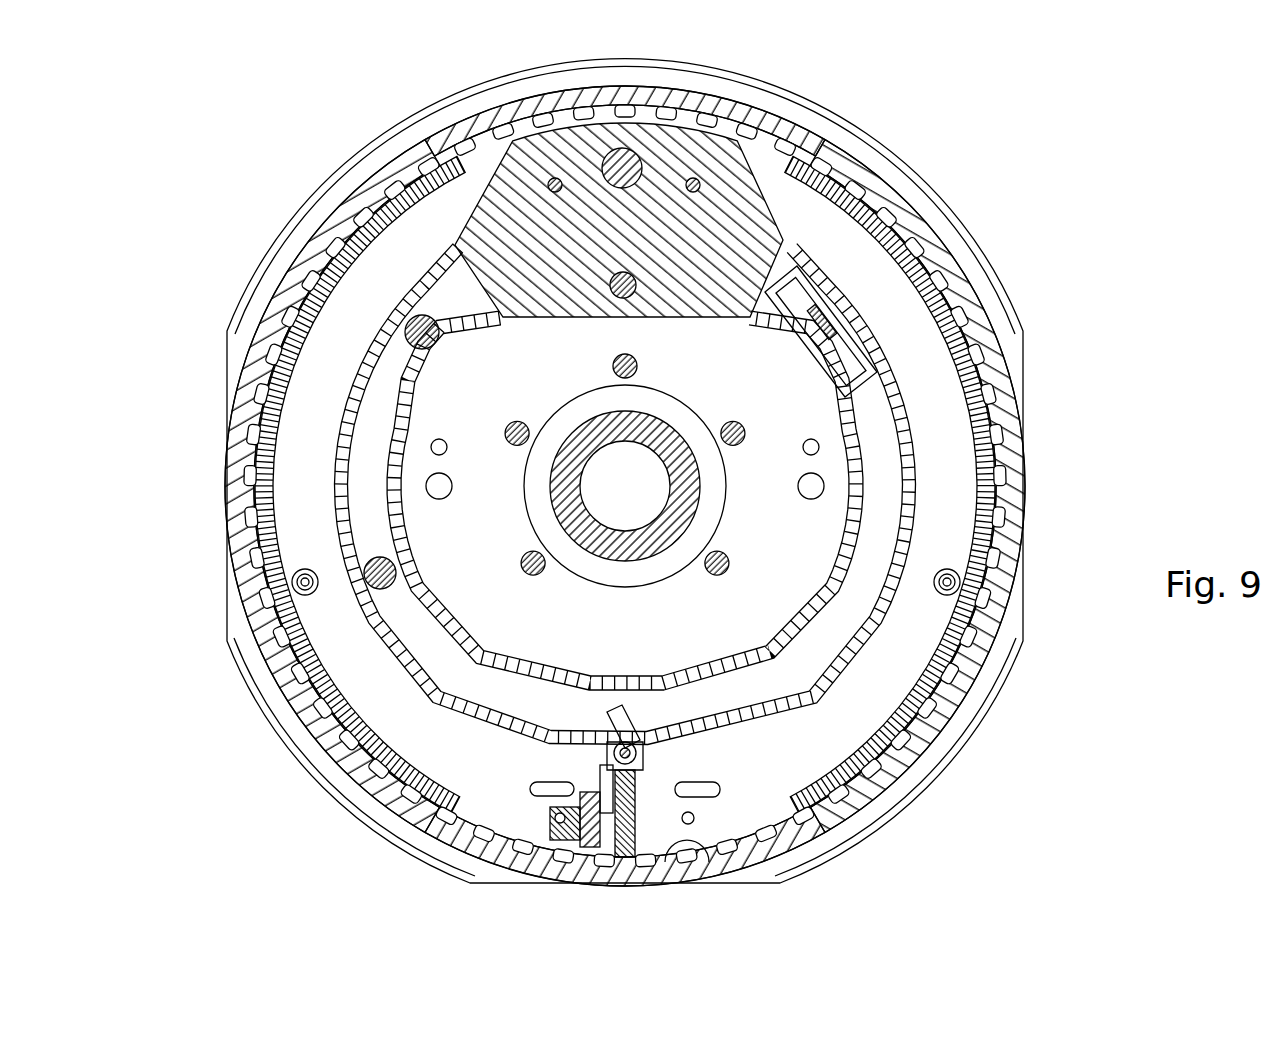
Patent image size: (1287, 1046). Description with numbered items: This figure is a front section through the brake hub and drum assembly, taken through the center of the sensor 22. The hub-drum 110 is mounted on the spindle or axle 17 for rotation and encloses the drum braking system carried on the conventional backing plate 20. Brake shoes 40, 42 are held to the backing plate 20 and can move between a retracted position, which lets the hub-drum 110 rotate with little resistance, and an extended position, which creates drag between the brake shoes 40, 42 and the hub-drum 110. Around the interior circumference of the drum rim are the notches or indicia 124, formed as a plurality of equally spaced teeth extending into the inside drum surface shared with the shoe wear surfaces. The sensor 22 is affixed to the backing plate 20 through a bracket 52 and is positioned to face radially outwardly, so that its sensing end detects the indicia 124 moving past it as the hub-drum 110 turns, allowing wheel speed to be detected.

The backing plate 20 is at (437, 107).
The hub-drum 110 is at (720, 110).
The brake shoe 42 is at (283, 503).
The brake shoe 40 is at (960, 460).
The spindle or axle 17 is at (690, 490).
The bracket 52 is at (560, 833).
The sensor 22 is at (632, 850).
The indicia 124 is at (703, 850).